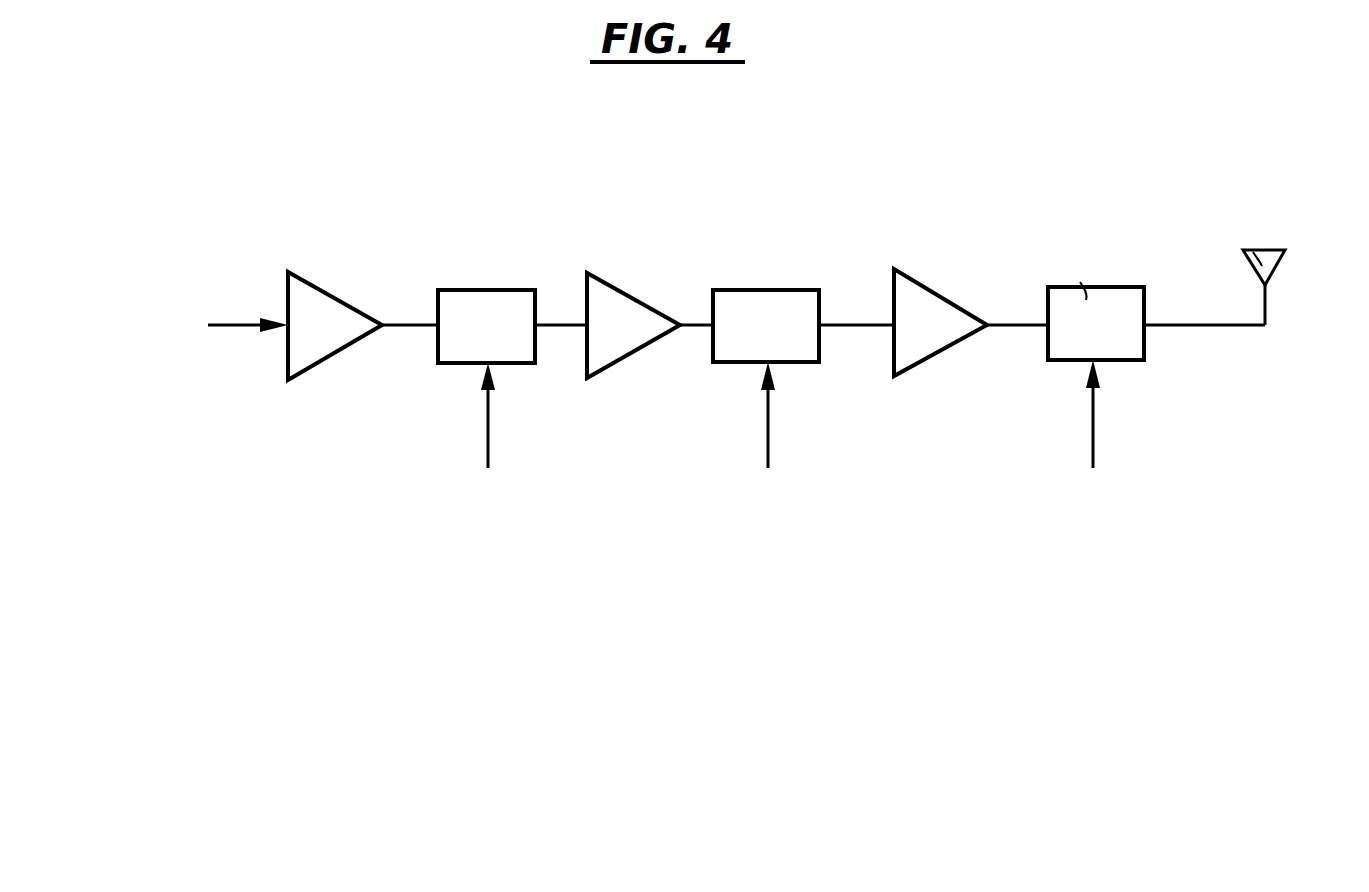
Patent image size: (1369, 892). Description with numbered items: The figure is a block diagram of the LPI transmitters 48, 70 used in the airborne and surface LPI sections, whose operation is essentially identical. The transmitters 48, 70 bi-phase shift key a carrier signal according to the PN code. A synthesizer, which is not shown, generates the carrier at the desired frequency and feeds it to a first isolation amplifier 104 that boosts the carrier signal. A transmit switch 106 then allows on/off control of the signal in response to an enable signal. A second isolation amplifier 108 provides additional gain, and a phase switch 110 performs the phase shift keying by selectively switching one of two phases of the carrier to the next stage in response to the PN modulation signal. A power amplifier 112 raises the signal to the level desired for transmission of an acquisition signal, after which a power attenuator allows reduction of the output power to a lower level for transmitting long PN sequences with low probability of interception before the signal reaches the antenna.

The LPI transmitter 48 is at (691, 331).
The LPI transmitter 70 is at (618, 143).
The first isolation amplifier 104 is at (315, 296).
The transmit switch 106 is at (452, 302).
The second isolation amplifier 108 is at (610, 294).
The phase switch 110 is at (726, 302).
The power amplifier 112 is at (924, 294).